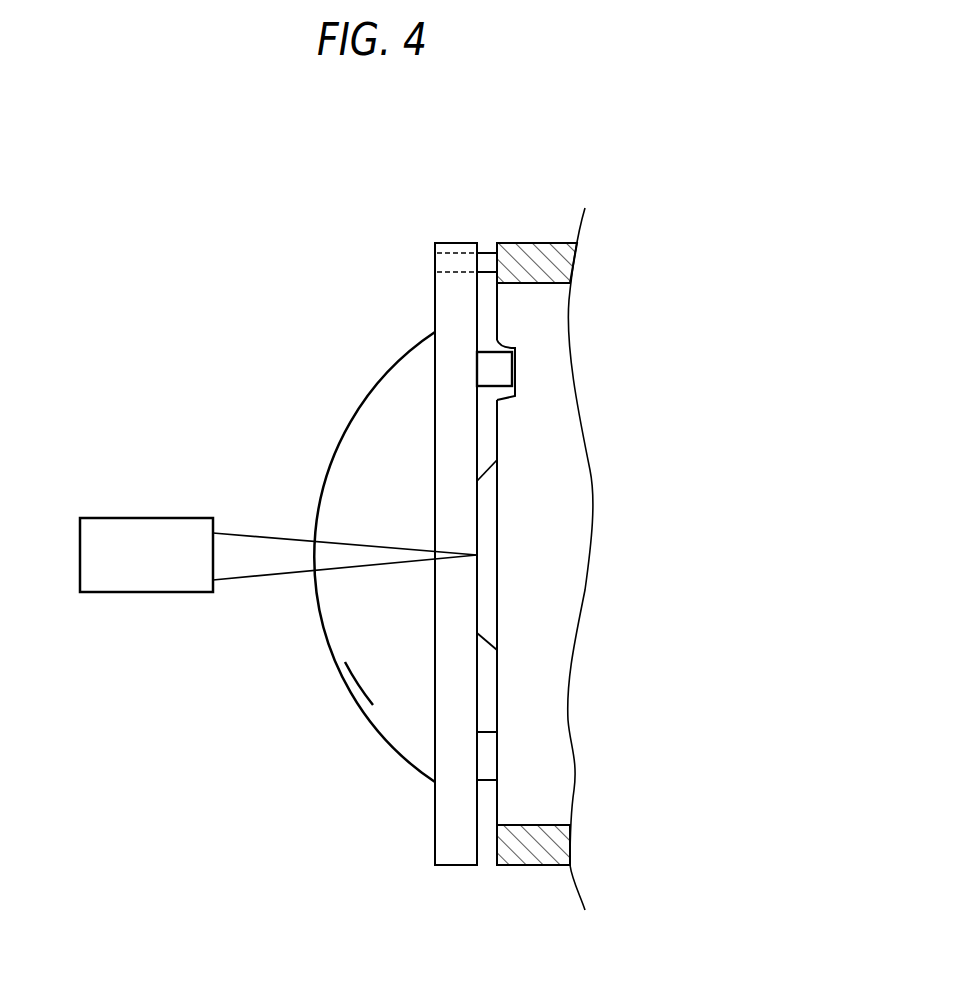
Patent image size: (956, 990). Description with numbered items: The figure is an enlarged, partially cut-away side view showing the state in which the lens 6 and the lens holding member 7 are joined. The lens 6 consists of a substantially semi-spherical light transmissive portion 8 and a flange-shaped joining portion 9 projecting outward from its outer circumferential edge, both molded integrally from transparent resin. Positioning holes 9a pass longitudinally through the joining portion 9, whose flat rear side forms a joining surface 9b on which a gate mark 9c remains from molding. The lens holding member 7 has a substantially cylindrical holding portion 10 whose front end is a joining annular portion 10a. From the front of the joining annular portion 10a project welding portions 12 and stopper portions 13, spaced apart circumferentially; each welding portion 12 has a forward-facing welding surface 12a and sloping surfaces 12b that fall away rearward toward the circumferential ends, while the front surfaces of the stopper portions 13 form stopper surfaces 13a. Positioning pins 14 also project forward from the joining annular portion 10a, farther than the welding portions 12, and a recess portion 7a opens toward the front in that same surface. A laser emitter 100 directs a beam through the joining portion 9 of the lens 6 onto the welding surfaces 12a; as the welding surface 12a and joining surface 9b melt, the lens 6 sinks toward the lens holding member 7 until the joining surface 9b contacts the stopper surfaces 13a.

The lens 6 is at (366, 685).
The lens holding member 7 is at (571, 511).
The recess portion 7a is at (503, 342).
The light transmissive portion 8 is at (345, 662).
The joining portion 9 is at (440, 313).
The positioning hole 9a is at (445, 255).
The joining surface 9b is at (477, 848).
The gate mark 9c is at (492, 385).
The holding portion 10 is at (545, 250).
The joining annular portion 10a is at (492, 250).
The welding portion 12 is at (483, 608).
The welding surface 12a is at (477, 583).
The sloping surface 12b is at (481, 472).
The stopper portion 13 is at (487, 779).
The stopper surface 13a is at (477, 752).
The positioning pin 14 is at (488, 252).
The laser emitter 100 is at (129, 533).